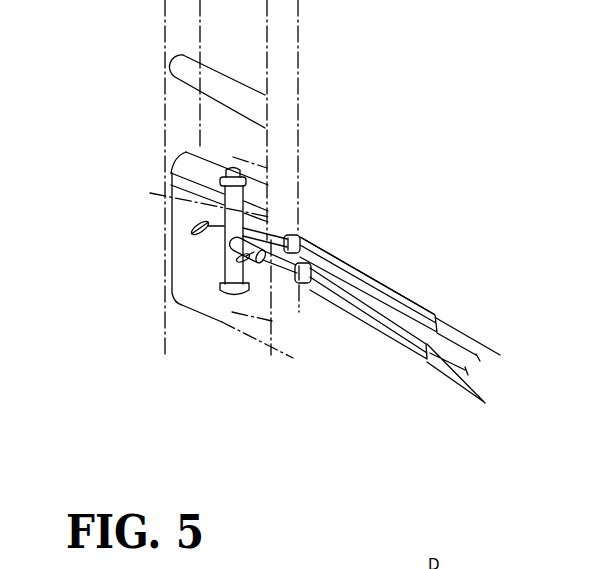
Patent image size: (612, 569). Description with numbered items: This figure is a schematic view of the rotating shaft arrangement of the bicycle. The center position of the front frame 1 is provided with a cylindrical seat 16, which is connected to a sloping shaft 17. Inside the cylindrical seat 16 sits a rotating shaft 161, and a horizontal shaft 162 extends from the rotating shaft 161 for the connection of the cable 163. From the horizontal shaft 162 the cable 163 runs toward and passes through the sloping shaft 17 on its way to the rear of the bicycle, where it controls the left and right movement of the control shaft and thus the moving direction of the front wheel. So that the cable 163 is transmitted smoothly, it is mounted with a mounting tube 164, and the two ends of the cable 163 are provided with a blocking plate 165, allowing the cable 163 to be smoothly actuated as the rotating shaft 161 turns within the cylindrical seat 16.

The front frame 1 is at (170, 35).
The cylindrical seat 16 is at (184, 280).
The rotating shaft 161 is at (224, 200).
The horizontal shaft 162 is at (192, 224).
The cable 163 is at (455, 330).
The mounting tube 164 is at (332, 242).
The blocking plate 165 is at (290, 235).
The sloping shaft 17 is at (401, 290).